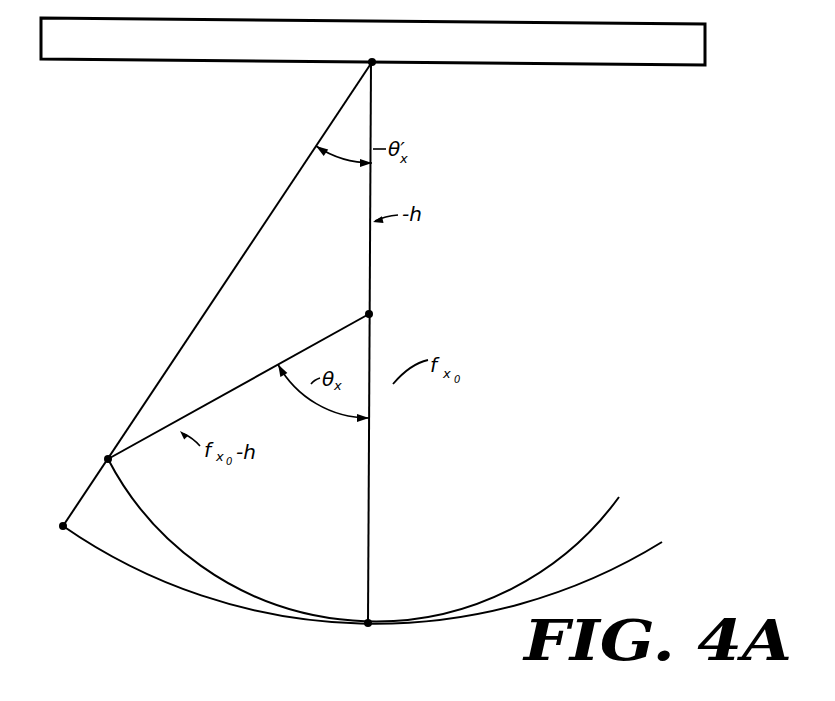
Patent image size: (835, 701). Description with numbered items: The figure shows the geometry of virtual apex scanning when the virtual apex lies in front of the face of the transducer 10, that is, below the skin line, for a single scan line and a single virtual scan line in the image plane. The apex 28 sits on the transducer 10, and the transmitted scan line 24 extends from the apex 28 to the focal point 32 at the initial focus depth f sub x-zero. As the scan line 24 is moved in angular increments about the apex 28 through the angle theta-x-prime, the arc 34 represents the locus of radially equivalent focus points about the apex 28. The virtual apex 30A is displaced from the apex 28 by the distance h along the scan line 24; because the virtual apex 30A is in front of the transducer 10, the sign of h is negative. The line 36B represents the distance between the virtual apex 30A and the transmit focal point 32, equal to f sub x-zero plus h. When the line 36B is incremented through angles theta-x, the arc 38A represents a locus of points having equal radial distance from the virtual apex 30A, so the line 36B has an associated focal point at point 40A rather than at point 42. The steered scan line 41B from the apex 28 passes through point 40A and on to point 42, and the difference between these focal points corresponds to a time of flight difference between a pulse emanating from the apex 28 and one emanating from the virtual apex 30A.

The transducer 10 is at (577, 70).
The transmitted scan line 24 is at (371, 488).
The apex 28 is at (378, 66).
The virtual apex 30A is at (376, 313).
The focal point 32 is at (371, 627).
The arc 34 is at (167, 585).
The line 36B is at (259, 375).
The arc 38A is at (219, 573).
The focal point 40A is at (103, 455).
The scan line 41B is at (229, 277).
The point 42 is at (60, 522).